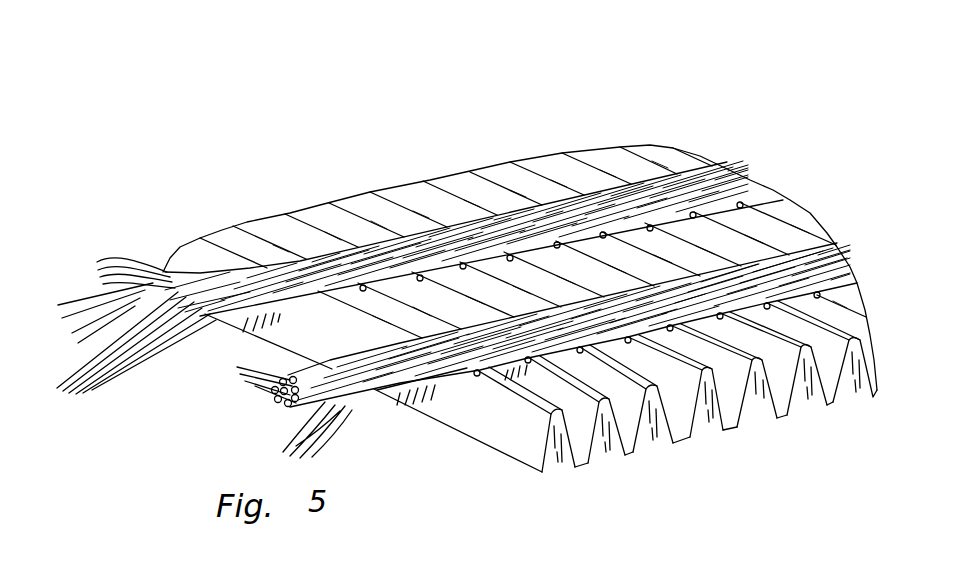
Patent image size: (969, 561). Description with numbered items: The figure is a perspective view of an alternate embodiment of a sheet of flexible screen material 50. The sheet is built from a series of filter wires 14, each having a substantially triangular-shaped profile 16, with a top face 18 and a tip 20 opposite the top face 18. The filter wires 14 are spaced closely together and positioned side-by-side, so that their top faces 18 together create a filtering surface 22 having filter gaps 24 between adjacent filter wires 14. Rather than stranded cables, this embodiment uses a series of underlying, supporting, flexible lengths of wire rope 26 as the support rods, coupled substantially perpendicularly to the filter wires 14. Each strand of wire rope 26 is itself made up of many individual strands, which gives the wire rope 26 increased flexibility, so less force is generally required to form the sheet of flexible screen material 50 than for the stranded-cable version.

The sheet of flexible screen material 50 is at (561, 93).
The wire rope 26 is at (240, 376).
The tip 20 is at (553, 401).
The top face 18 is at (563, 473).
The filter wire 14 is at (667, 450).
The filtering surface 22 is at (719, 466).
The filter gap 24 is at (783, 418).
The triangular-shaped profile 16 is at (770, 419).